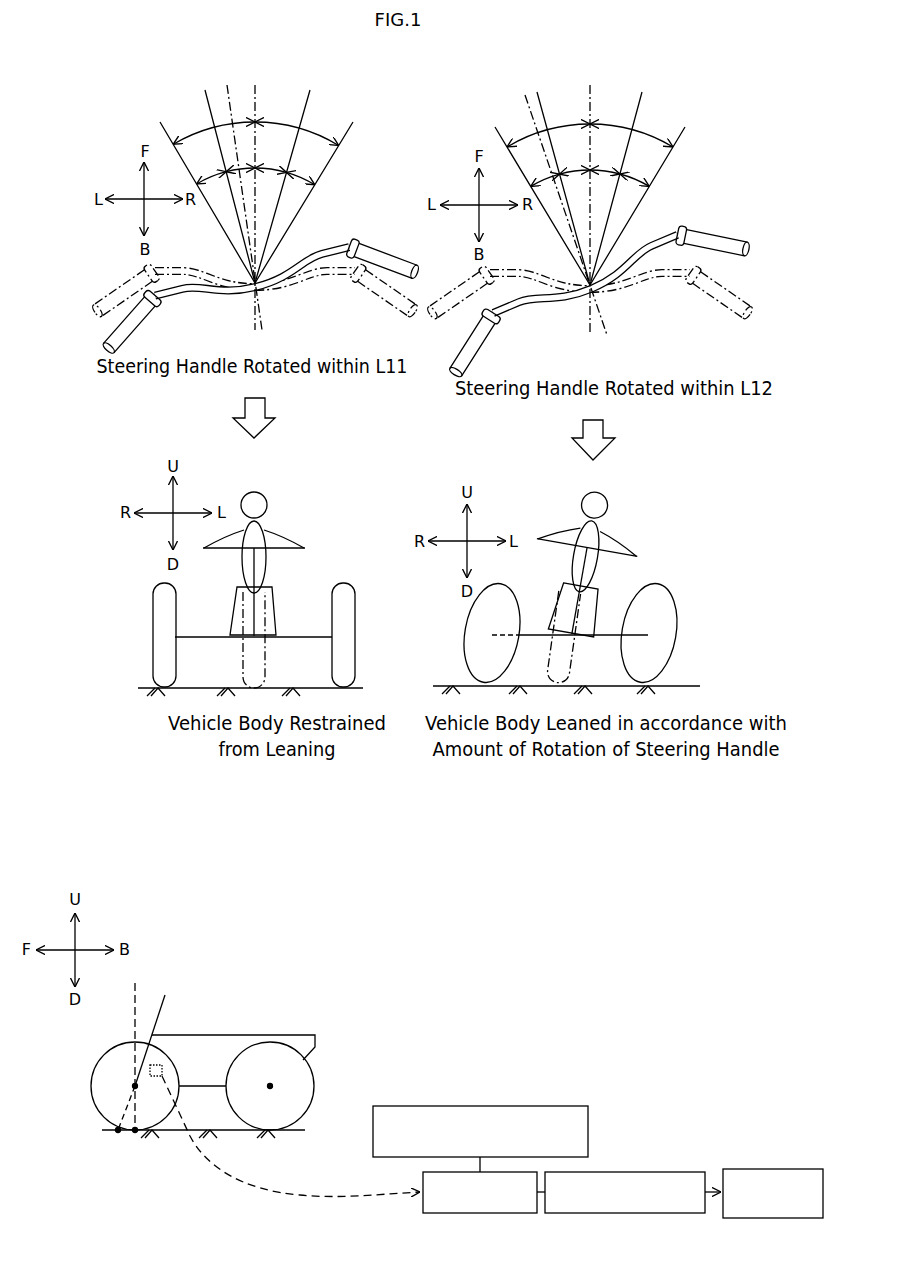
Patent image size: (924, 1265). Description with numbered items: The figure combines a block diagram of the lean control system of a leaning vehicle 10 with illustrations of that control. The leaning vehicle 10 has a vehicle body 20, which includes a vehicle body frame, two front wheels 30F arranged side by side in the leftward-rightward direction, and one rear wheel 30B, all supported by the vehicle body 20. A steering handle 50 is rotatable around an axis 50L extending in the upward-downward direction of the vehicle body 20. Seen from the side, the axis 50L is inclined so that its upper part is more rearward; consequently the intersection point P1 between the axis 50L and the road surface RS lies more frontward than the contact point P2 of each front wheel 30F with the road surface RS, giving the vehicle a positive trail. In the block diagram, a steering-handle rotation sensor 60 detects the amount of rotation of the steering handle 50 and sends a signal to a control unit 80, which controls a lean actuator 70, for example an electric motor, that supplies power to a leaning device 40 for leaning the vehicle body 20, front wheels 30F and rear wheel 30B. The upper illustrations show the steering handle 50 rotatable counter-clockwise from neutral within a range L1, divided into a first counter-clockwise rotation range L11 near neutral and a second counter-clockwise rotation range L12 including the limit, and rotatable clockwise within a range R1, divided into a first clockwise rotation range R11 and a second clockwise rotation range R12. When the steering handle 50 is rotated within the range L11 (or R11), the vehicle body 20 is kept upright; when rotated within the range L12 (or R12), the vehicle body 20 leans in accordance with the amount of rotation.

The leaning vehicle 10 is at (312, 547).
The vehicle body 20 is at (257, 607).
The front wheels 30F is at (153, 600).
The rear wheel 30B is at (265, 645).
The leaning device 40 is at (782, 1170).
The steering handle 50 is at (335, 262).
The axis 50L is at (259, 292).
The steering-handle rotation sensor 60 is at (517, 1106).
The lean actuator 70 is at (652, 1172).
The control unit 80 is at (500, 1213).
The road surface RS is at (228, 1129).
The intersection point P1 is at (118, 1133).
The contact point P2 is at (137, 1133).
The counter-clockwise rotatable range L1 is at (195, 137).
The clockwise rotatable range R1 is at (315, 137).
The first counter-clockwise rotation range L11 is at (247, 165).
The second counter-clockwise rotation range L12 is at (213, 176).
The first clockwise rotation range R11 is at (271, 165).
The second clockwise rotation range R12 is at (302, 176).